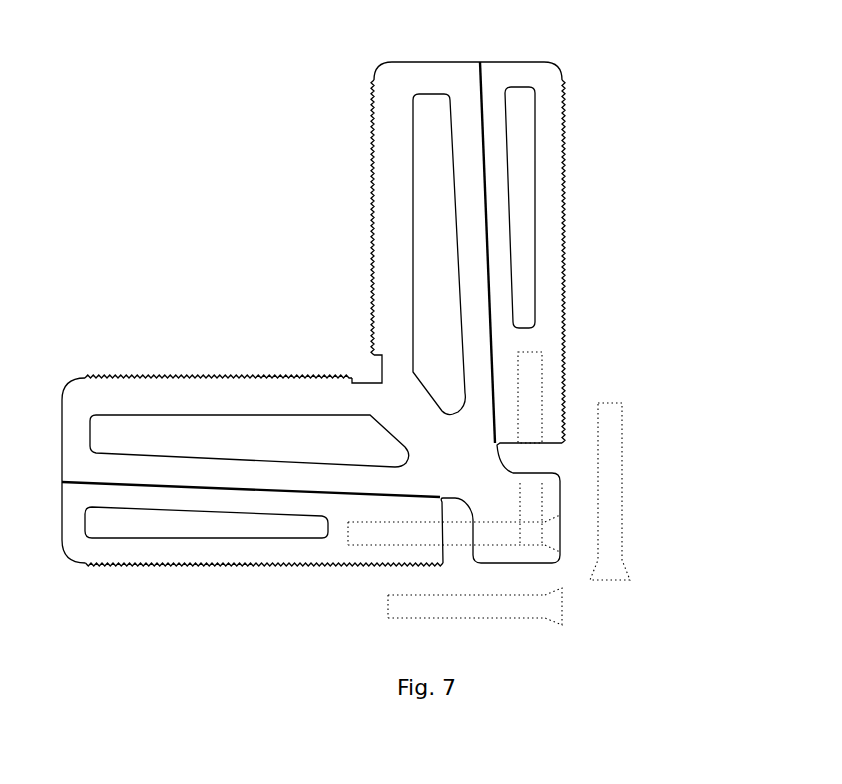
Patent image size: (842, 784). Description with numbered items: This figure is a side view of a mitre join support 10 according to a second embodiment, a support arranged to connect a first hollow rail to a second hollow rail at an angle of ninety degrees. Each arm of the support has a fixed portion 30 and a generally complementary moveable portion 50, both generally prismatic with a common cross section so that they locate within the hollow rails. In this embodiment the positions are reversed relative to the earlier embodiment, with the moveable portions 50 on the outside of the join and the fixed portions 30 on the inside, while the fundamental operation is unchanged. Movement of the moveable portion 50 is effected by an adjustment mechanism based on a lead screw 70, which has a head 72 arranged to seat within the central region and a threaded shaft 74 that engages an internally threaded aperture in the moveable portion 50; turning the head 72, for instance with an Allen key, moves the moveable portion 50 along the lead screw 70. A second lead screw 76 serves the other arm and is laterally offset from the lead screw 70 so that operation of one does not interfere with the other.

The mitre join support 10 is at (280, 190).
The fixed portion 30 is at (387, 132).
The moveable portion 50 is at (558, 157).
The lead screw 70 is at (472, 610).
The head 72 is at (560, 603).
The threaded shaft 74 is at (402, 608).
The lead screw 76 is at (615, 483).